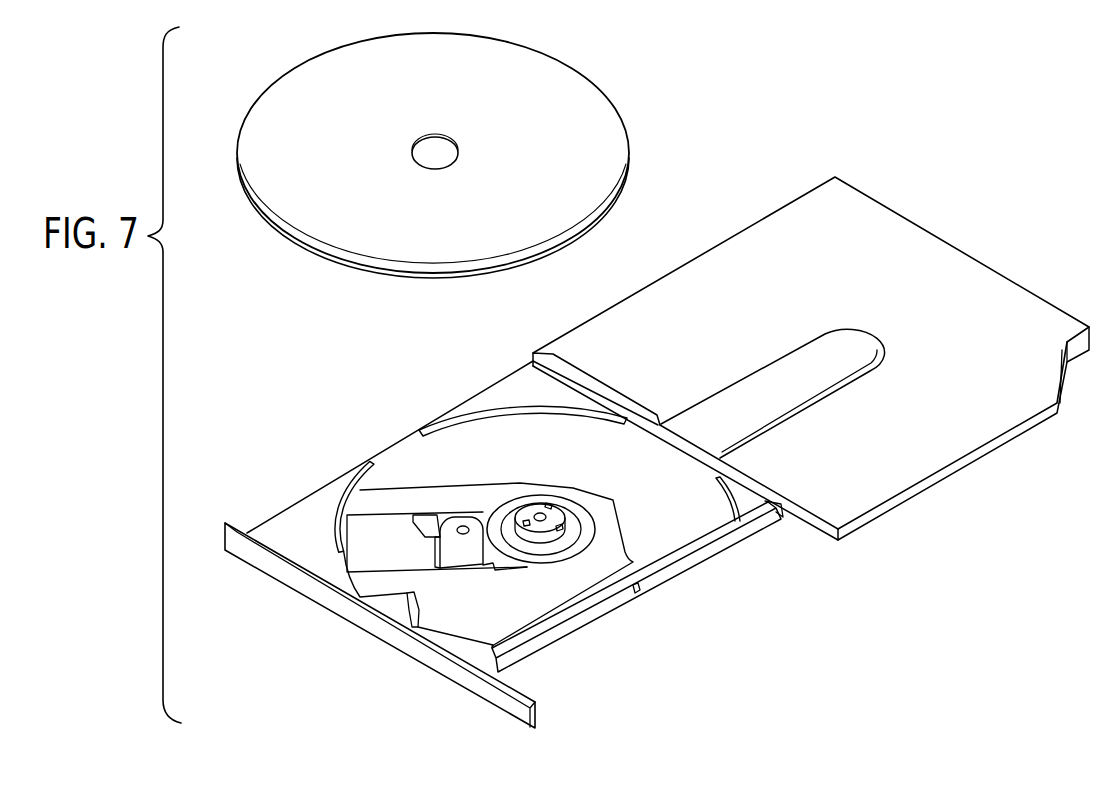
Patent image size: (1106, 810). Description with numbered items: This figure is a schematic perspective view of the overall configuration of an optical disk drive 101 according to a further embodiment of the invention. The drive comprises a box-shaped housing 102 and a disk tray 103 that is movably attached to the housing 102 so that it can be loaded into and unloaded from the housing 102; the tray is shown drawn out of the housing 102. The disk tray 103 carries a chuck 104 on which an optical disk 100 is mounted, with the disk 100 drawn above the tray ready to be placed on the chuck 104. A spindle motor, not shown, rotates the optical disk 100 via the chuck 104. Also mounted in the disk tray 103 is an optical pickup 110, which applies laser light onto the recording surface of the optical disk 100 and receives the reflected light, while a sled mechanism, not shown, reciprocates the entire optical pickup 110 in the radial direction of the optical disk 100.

The optical disk 100 is at (557, 70).
The optical disk drive 101 is at (1048, 679).
The housing 102 is at (811, 198).
The disk tray 103 is at (532, 544).
The chuck 104 is at (578, 512).
The optical pickup 110 is at (467, 557).